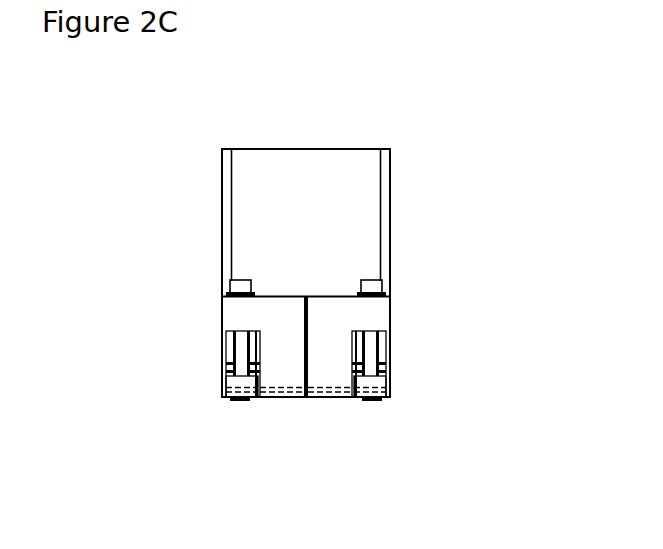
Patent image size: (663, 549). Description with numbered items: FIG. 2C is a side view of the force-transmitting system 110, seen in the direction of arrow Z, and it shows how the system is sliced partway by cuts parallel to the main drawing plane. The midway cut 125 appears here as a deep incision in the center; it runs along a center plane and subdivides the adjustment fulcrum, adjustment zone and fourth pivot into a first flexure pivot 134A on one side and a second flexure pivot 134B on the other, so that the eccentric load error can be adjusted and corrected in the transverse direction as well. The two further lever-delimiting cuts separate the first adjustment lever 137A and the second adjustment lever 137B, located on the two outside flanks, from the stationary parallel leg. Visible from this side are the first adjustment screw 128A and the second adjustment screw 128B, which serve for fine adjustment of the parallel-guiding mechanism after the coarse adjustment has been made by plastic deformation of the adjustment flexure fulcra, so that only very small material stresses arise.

The force-transmitting system 110 is at (326, 214).
The midway cut 125 is at (308, 314).
The first adjustment screw 128A is at (243, 353).
The second adjustment screw 128B is at (372, 353).
The first adjustment lever 137A is at (238, 383).
The second adjustment lever 137B is at (375, 382).
The first flexure pivot 134A is at (285, 390).
The second flexure pivot 134B is at (332, 390).